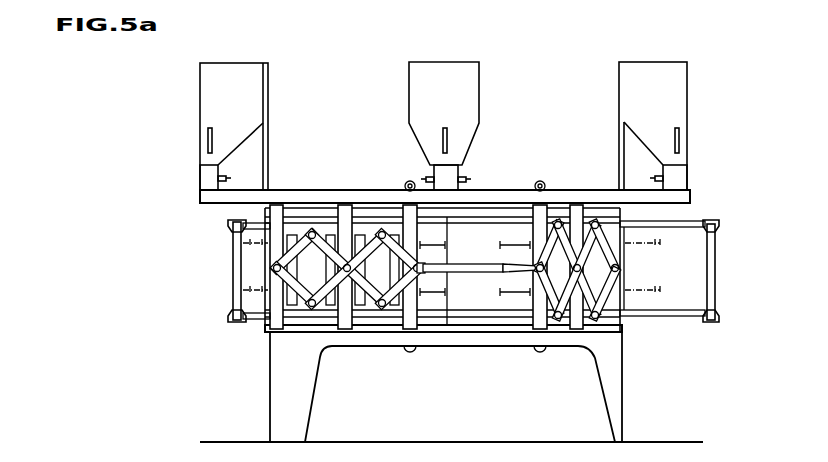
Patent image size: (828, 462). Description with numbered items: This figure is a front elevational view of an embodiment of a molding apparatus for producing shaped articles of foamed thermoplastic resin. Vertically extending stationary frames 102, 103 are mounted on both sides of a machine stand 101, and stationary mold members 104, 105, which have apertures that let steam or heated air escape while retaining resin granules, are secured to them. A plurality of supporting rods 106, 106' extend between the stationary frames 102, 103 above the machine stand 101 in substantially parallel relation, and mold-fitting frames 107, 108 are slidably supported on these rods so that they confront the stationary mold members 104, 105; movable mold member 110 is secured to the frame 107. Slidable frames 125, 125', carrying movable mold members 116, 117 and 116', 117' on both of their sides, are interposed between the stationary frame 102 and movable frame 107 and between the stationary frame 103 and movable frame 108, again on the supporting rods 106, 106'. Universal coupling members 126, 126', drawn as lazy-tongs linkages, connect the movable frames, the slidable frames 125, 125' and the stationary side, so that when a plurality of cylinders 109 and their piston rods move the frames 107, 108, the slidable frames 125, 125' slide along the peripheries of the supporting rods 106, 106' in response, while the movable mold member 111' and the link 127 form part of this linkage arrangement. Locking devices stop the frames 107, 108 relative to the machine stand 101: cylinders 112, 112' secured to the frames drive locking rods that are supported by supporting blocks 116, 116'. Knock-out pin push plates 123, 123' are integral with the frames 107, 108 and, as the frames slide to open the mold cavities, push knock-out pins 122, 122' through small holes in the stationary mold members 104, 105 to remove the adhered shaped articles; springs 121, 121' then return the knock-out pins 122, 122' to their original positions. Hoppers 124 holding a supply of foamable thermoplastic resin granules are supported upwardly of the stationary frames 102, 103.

The machine stand 101 is at (447, 344).
The stationary frame 102 is at (262, 315).
The stationary frame 103 is at (616, 305).
The stationary mold member 104 is at (277, 332).
The stationary mold member 105 is at (617, 300).
The supporting rod 106 is at (442, 298).
The supporting rod 106' is at (445, 177).
The mold-fitting frame 107 is at (408, 326).
The mold-fitting frame 108 is at (545, 333).
The cylinder 109 is at (456, 265).
The movable mold member 110 is at (395, 307).
The scissor link 111' is at (520, 305).
The cylinder 112 is at (403, 274).
The cylinder 112' is at (534, 284).
The movable mold member 116 is at (343, 317).
The movable mold member 116' is at (657, 278).
The movable mold member 117 is at (346, 268).
The movable mold member 117' is at (541, 270).
The spring 121 is at (223, 271).
The spring 121' is at (690, 268).
The knock-out pin 122 is at (353, 269).
The knock-out pin 122' is at (681, 220).
The knock-out pin push plate 123 is at (211, 271).
The knock-out pin push plate 123' is at (720, 288).
The hopper 124 is at (258, 83).
The slidable frame 125 is at (337, 241).
The slidable frame 125' is at (575, 240).
The universal coupling member 126 is at (300, 196).
The universal coupling member 126' is at (585, 350).
The post 127 is at (449, 305).